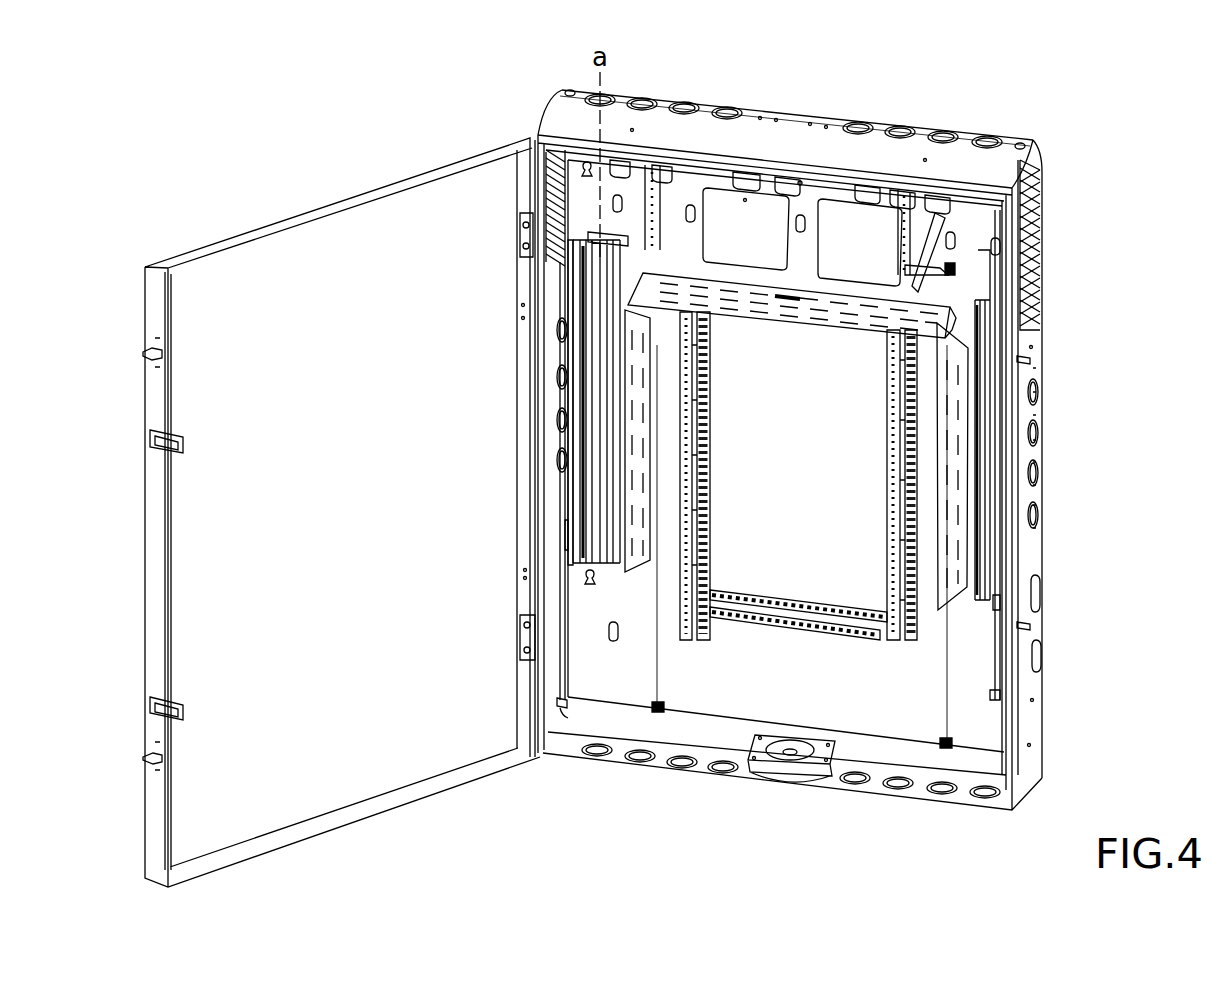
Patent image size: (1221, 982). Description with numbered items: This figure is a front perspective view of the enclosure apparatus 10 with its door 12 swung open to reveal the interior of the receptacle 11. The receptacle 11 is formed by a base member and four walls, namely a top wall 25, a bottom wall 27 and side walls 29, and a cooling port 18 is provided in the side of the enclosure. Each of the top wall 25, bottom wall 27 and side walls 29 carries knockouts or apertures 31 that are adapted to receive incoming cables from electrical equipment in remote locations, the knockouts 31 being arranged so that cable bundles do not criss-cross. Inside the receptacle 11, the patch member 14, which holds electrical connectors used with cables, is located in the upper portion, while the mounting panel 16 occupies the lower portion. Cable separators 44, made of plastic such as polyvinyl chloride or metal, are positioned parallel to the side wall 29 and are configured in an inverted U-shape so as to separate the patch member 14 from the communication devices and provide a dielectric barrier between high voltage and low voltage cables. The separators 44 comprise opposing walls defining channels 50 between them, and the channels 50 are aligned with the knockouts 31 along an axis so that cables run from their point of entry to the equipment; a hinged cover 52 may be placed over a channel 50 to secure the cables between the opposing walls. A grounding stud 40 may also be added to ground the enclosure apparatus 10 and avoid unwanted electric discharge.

The enclosure apparatus 10 is at (935, 102).
The receptacle 11 is at (1010, 131).
The door 12 is at (318, 616).
The patch member 14 is at (910, 226).
The mounting panel 16 is at (817, 506).
The cooling port 18 is at (1040, 186).
The top wall 25 is at (824, 124).
The bottom wall 27 is at (842, 790).
The side wall 29 is at (1030, 696).
The knockouts 31 is at (731, 109).
The grounding stud 40 is at (563, 768).
The cable separators 44 is at (942, 321).
The channels 50 is at (605, 566).
The hinged cover 52 is at (568, 566).